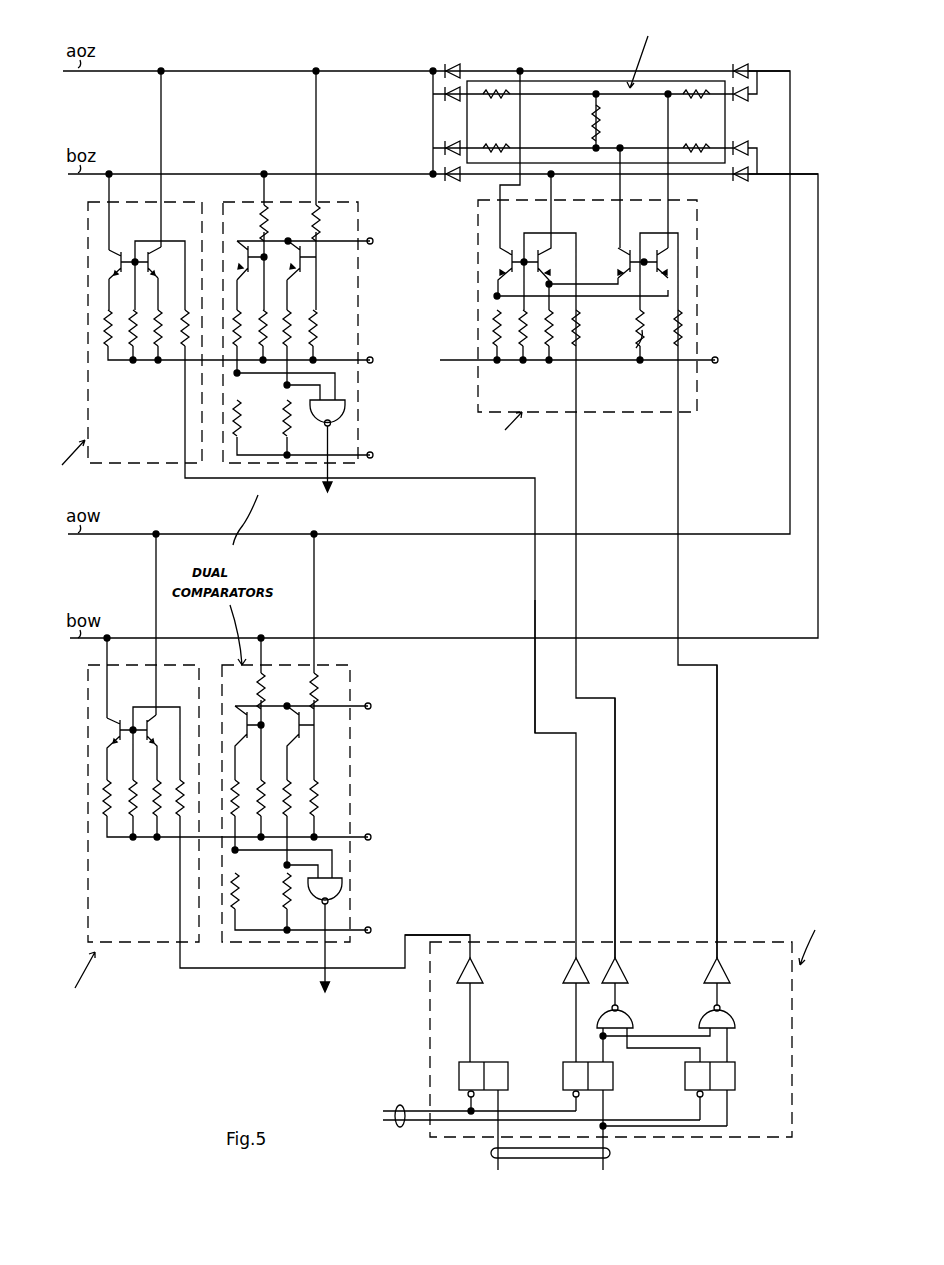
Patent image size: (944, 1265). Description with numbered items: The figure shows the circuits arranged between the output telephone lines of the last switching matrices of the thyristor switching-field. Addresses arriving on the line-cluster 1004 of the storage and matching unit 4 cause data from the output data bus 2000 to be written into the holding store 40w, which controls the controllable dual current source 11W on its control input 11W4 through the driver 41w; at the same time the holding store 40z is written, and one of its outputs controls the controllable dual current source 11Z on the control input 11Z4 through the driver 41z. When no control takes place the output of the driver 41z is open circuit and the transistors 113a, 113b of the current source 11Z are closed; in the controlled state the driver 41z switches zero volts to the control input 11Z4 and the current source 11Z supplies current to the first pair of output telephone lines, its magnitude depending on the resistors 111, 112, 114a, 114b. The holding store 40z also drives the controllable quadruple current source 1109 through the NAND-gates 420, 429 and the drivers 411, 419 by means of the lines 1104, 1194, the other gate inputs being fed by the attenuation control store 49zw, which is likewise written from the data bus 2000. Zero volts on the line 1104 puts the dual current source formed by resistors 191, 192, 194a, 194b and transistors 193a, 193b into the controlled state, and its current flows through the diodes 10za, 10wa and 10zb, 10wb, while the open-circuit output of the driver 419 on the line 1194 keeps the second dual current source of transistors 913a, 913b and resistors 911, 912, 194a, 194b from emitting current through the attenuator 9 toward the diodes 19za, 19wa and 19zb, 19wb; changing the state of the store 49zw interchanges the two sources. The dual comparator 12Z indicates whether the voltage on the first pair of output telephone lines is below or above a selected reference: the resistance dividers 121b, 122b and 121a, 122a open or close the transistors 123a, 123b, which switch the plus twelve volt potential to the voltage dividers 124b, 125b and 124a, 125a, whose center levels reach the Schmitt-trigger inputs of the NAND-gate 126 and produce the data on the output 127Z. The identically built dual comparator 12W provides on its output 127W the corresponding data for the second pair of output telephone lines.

The attenuator 9 is at (565, 80).
The diode 10za is at (450, 63).
The diode 10zb is at (450, 180).
The diode 10wa is at (736, 63).
The diode 10wb is at (738, 180).
The diode 19za is at (431, 94).
The diode 19zb is at (431, 146).
The diode 19wa is at (755, 96).
The diode 19wb is at (755, 142).
The controllable dual current source 11Z is at (128, 465).
The controllable dual current source 11W is at (128, 945).
The dual comparator 12Z is at (355, 284).
The dual comparator 12W is at (355, 758).
The transistor 113a is at (150, 265).
The transistor 113b is at (110, 262).
The resistor 114a is at (155, 351).
The resistor 114b is at (108, 332).
The resistor 111 is at (182, 347).
The resistor 112 is at (133, 355).
The resistance divider 121a is at (318, 214).
The resistance divider 121b is at (266, 208).
The resistance divider 122a is at (310, 332).
The resistance divider 122b is at (267, 355).
The transistor 123a is at (304, 276).
The transistor 123b is at (246, 254).
The resistor 124a is at (282, 330).
The resistor 124b is at (237, 320).
The resistor 125a is at (288, 442).
The resistor 125b is at (238, 443).
The NAND-gate 126 is at (332, 399).
The output 127Z is at (342, 492).
The output 127W is at (338, 986).
The controllable quadruple current source 1109 is at (700, 400).
The transistor 193a is at (510, 236).
The transistor 193b is at (546, 236).
The transistor 913a is at (632, 248).
The transistor 913b is at (648, 264).
The resistor 194a is at (493, 326).
The resistor 194b is at (542, 340).
The resistor 191 is at (568, 330).
The resistor 192 is at (522, 334).
The resistor 911 is at (677, 312).
The resistor 912 is at (648, 359).
The control input 11Z4 is at (576, 836).
The line 1104 is at (615, 838).
The line 1194 is at (717, 838).
The control input 11W4 is at (456, 935).
The storage and matching unit 4 is at (778, 1103).
The driver 41w is at (478, 991).
The driver 41z is at (562, 976).
The driver 411 is at (626, 970).
The driver 419 is at (725, 968).
The NAND-gate 420 is at (630, 1016).
The NAND-gate 429 is at (733, 1014).
The holding store 40w is at (505, 1116).
The holding store 40z is at (612, 1116).
The attenuation control store 49zw is at (734, 1083).
The line-cluster 1004 is at (395, 1107).
The output data bus 2000 is at (610, 1158).